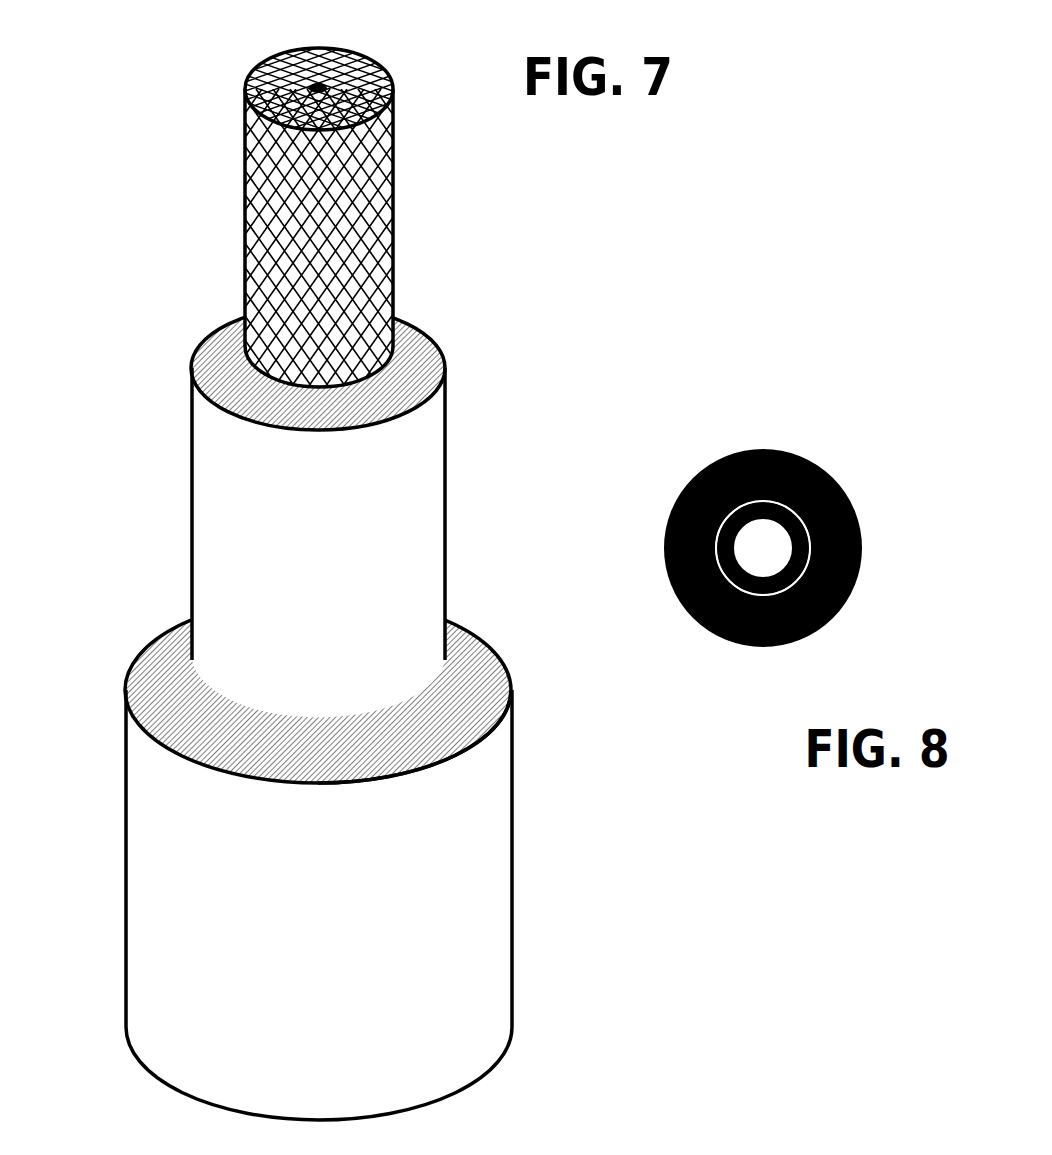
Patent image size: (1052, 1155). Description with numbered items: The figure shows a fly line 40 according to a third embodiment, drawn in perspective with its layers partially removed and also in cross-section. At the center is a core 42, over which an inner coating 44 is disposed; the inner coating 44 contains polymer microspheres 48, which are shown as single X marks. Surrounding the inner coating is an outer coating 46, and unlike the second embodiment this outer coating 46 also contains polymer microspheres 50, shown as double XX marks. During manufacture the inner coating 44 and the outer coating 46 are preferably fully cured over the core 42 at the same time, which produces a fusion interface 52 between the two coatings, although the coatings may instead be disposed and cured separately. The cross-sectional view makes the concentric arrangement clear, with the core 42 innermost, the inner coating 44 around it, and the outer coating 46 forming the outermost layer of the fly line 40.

In FIG. 7, the fly line 40 is at (160, 155).
In FIG. 7, the core 42 is at (350, 213).
In FIG. 8, the core 42 is at (762, 550).
In FIG. 7, the inner coating 44 is at (430, 352).
In FIG. 8, the inner coating 44 is at (763, 507).
In FIG. 7, the outer coating 46 is at (465, 630).
In FIG. 8, the outer coating 46 is at (810, 480).
In FIG. 7, the polymer microspheres 48 is at (210, 433).
In FIG. 8, the polymer microspheres 48 is at (797, 568).
In FIG. 7, the polymer microspheres 50 is at (155, 848).
In FIG. 8, the polymer microspheres 50 is at (695, 488).
In FIG. 7, the fusion interface 52 is at (430, 685).
In FIG. 8, the fusion interface 52 is at (717, 568).